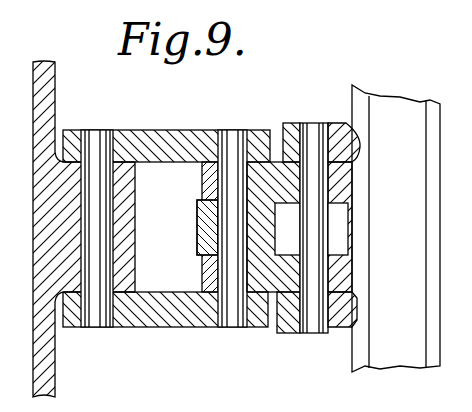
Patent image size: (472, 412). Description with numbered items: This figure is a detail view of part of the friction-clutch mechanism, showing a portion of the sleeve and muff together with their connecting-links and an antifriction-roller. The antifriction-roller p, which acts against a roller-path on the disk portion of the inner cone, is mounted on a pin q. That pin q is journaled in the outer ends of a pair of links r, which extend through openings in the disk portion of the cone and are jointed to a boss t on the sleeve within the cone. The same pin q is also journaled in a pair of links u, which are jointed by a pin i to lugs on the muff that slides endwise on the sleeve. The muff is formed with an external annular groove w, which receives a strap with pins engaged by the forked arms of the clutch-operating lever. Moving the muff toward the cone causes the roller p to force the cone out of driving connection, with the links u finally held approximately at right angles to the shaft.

The links r is at (163, 130).
The boss t is at (146, 184).
The antifriction-roller p is at (197, 228).
The pin q is at (244, 328).
The links u is at (283, 250).
The pin i is at (330, 228).
The external annular groove w is at (396, 228).